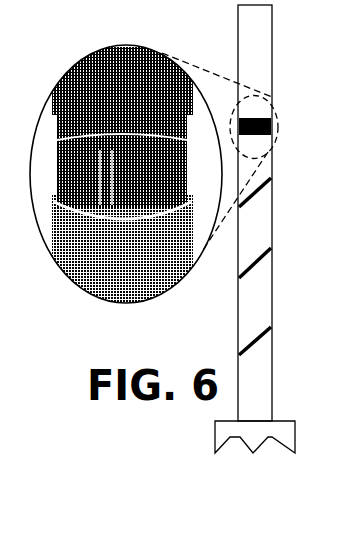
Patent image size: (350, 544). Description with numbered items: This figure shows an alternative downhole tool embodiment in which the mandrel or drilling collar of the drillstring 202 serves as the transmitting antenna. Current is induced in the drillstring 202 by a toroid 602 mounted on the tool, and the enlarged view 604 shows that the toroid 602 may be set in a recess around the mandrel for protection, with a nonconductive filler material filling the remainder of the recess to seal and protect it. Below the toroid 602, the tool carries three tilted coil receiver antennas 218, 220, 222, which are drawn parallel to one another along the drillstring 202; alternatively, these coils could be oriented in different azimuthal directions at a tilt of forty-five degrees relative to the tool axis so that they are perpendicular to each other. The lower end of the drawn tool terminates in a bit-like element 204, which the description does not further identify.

The enlarged view 604 is at (162, 53).
The drillstring 202 is at (265, 72).
The toroid 602 is at (270, 137).
The tilted coil receiver antenna 218 is at (268, 183).
The tilted coil receiver antenna 220 is at (268, 250).
The tilted coil receiver antenna 222 is at (268, 328).
The handle 204 is at (289, 421).